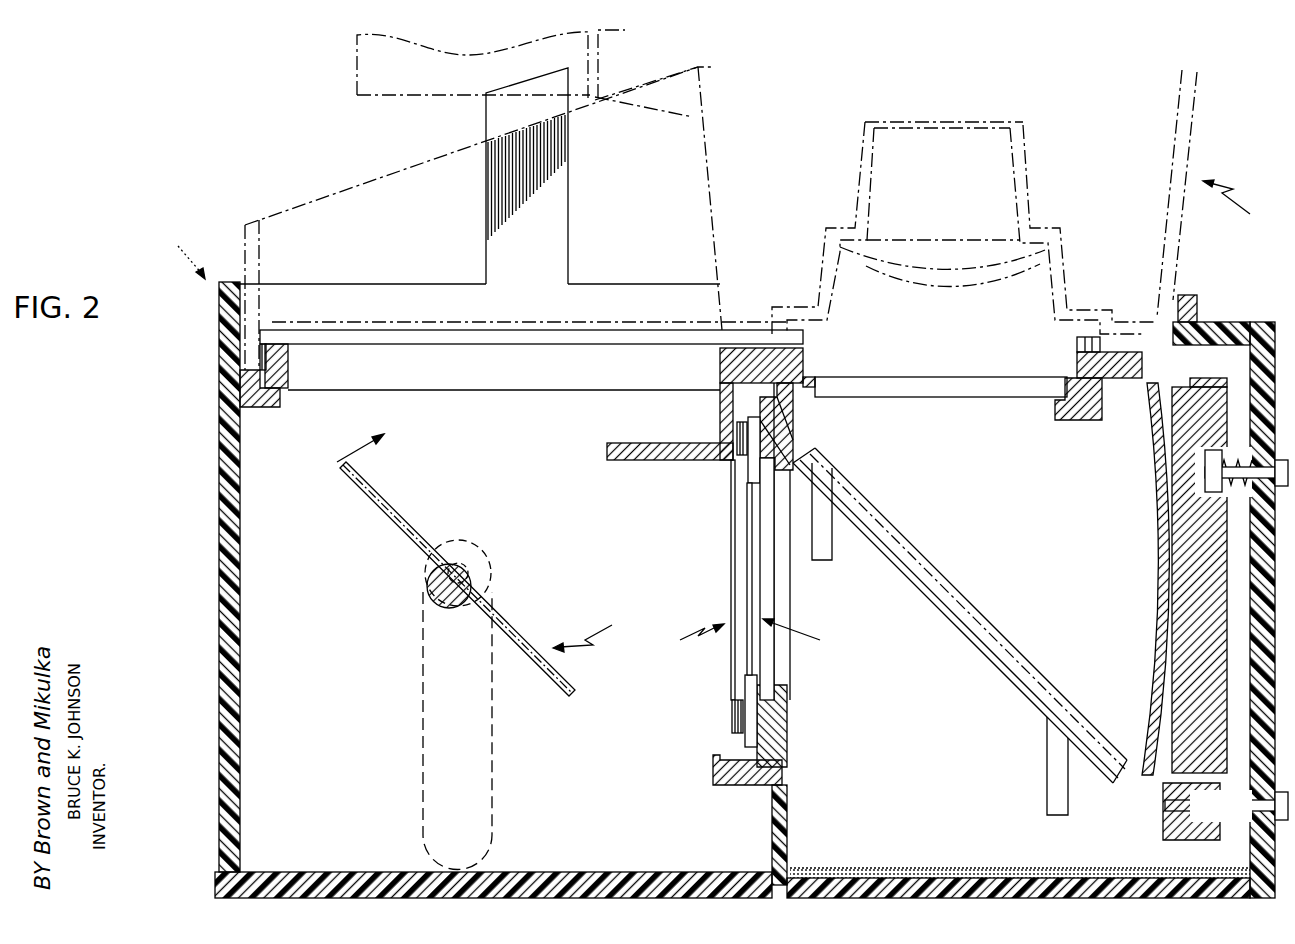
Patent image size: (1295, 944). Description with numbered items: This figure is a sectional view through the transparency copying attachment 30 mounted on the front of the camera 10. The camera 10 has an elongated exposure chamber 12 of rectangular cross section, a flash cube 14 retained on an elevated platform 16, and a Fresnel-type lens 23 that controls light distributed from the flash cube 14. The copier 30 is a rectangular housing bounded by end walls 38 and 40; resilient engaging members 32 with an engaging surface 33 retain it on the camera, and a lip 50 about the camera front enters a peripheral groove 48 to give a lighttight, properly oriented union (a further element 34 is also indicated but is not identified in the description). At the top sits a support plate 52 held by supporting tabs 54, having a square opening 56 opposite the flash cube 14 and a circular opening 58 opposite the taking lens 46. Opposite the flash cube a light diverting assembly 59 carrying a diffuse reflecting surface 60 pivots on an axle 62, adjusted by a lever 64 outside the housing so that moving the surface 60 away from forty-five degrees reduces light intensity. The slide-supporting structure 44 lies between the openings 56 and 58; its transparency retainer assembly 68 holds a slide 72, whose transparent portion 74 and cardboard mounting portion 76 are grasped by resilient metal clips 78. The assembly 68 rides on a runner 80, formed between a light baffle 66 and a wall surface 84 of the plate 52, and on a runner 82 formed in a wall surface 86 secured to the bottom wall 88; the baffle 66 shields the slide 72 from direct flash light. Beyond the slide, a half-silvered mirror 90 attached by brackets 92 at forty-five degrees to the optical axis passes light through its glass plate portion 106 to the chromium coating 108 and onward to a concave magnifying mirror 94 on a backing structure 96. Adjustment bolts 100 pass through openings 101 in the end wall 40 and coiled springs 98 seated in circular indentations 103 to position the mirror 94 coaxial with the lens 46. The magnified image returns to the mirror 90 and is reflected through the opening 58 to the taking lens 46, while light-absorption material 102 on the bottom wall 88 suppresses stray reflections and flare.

The camera 10 is at (1240, 205).
The exposure chamber 12 is at (1148, 130).
The flash cube 14 is at (380, 66).
The elevated platform 16 is at (662, 57).
The Fresnel-type lens 23 is at (307, 335).
The copying attachment 30 is at (179, 252).
The resilient engaging members 32 is at (555, 237).
The engaging surface 33 is at (512, 128).
The reference line 34 is at (395, 175).
The end wall 38 is at (222, 492).
The end wall 40 is at (1285, 340).
The slide-supporting structure 44 is at (719, 541).
The taking lens 46 is at (1020, 253).
The peripheral groove 48 is at (243, 370).
The lip 50 is at (250, 355).
The support plate 52 is at (290, 373).
The supporting tabs 54 is at (273, 408).
The square opening 56 is at (493, 377).
The circular opening 58 is at (962, 356).
The light diverting assembly 59 is at (596, 629).
The diffuse reflecting surface 60 is at (385, 500).
The axle 62 is at (440, 588).
The lever 64 is at (473, 755).
The light baffle 66 is at (648, 456).
The transparency retainer assembly 68 is at (773, 445).
The photographic transparency 72 is at (807, 579).
The transparent portion 74 is at (752, 532).
The cardboard mounting portion 76 is at (755, 465).
The resilient metal clips 78 is at (737, 428).
The runner 80 is at (792, 408).
The runner 82 is at (737, 782).
The wall surface 84 is at (790, 432).
The wall surface 86 is at (788, 800).
The bottom wall 88 is at (715, 873).
The half-silvered mirror 90 is at (960, 578).
The brackets 92 is at (817, 553).
The concave magnifying mirror 94 is at (1150, 428).
The backing structure 96 is at (1160, 567).
The coiled springs 98 is at (1178, 505).
The adjustment bolts 100 is at (1247, 833).
The openings 101 is at (1200, 472).
The light-absorption material 102 is at (908, 867).
The circular indentations 103 is at (1162, 455).
The glass plate portion 106 is at (1028, 700).
The chromium coating 108 is at (1063, 703).